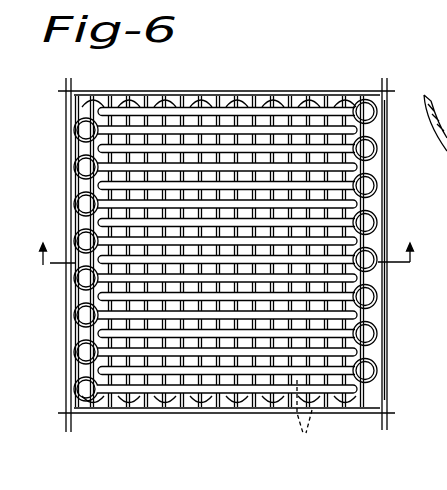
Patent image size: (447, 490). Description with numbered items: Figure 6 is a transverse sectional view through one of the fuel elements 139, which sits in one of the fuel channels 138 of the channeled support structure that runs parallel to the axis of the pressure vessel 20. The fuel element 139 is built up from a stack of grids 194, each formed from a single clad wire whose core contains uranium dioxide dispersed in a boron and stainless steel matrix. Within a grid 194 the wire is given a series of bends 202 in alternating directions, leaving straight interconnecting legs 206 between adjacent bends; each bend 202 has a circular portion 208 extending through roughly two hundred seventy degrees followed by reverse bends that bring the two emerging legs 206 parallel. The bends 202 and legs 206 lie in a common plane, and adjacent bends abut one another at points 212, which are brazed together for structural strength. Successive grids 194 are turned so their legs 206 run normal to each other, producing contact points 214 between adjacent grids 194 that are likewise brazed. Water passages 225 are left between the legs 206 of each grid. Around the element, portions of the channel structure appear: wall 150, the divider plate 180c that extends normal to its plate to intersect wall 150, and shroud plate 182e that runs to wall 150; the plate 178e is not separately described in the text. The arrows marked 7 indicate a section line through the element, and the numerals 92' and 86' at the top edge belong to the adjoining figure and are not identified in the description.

The wall 150 is at (68, 130).
The pressure vessel 20 is at (70, 198).
The straight interconnecting legs 206 is at (190, 127).
The shroud plate 182e is at (282, 93).
The bends 202 is at (380, 188).
The fitting 178e is at (378, 291).
The fuel element 139 is at (345, 335).
The circular portion 208 is at (386, 350).
The water passages 225 is at (112, 320).
The points 212 is at (75, 362).
The grids 194 is at (170, 363).
The divider plate 180c is at (218, 414).
The fuel channels 138 is at (283, 408).
The contact points 214 is at (320, 412).
The section line 7— 7 is at (226, 258).
The element of adjacent figure 92' is at (337, 8).
The element of adjacent figure 86' is at (415, 8).